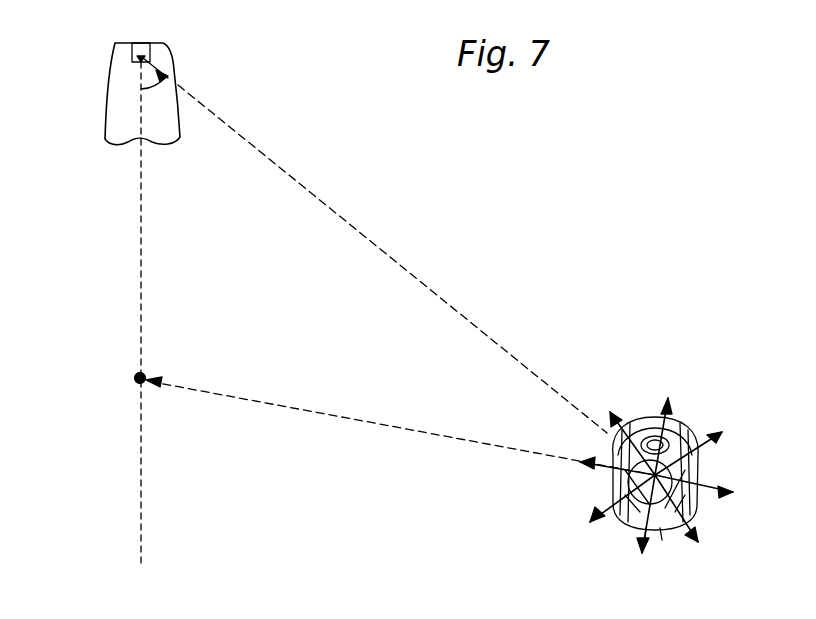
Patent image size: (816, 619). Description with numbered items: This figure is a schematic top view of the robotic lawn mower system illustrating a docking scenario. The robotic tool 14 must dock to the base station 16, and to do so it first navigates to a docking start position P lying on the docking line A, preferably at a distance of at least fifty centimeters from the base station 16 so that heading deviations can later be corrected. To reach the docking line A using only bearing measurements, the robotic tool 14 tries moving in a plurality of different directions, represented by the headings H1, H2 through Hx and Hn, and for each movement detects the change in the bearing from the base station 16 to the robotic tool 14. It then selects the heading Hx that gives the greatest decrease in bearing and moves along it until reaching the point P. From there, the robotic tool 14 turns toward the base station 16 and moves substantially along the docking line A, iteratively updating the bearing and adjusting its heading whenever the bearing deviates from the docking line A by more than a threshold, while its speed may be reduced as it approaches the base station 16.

The robotic tool 14 is at (669, 449).
The base station 16 is at (106, 109).
The docking start position P is at (121, 381).
The docking line A is at (155, 316).
The selected heading Hx is at (611, 456).
The first heading H1 is at (689, 527).
The second heading H2 is at (713, 492).
The nth heading Hn is at (636, 534).